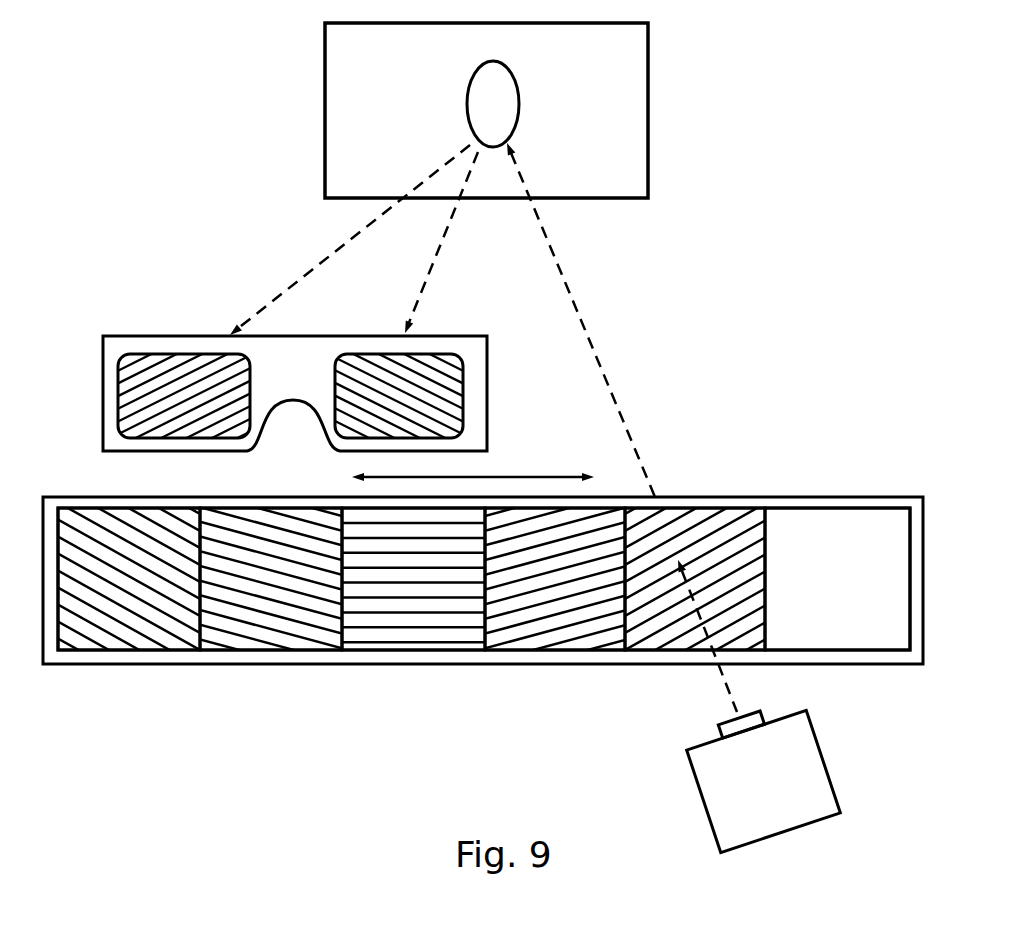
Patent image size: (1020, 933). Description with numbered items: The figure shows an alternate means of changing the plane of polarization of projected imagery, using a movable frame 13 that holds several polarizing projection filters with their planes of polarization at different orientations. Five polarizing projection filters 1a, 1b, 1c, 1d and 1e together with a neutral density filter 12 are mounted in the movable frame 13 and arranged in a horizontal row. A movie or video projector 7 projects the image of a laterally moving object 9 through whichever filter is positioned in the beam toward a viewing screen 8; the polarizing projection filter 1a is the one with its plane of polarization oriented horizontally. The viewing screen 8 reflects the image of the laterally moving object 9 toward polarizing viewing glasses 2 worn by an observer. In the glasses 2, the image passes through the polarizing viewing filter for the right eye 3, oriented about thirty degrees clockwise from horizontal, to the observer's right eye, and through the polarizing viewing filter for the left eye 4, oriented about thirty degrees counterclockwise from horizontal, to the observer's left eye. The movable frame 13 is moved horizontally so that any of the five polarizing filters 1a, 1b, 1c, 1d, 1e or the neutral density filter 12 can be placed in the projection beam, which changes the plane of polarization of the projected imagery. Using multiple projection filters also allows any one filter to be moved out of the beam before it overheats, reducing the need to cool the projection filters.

The viewing screen 8 is at (345, 143).
The laterally moving object 9 is at (502, 107).
The polarizing viewing glasses 2 is at (177, 347).
The polarizing viewing filter for the left eye 4 is at (153, 365).
The polarizing viewing filter for the right eye 3 is at (430, 362).
The movable frame 13 is at (490, 658).
The polarizing projection filter 1a is at (438, 615).
The polarizing projection filter 1b is at (287, 613).
The polarizing projection filter 1c is at (153, 622).
The polarizing projection filter 1d is at (583, 623).
The polarizing projection filter 1e is at (733, 528).
The neutral density filter 12 is at (845, 532).
The movie or video projector 7 is at (783, 770).